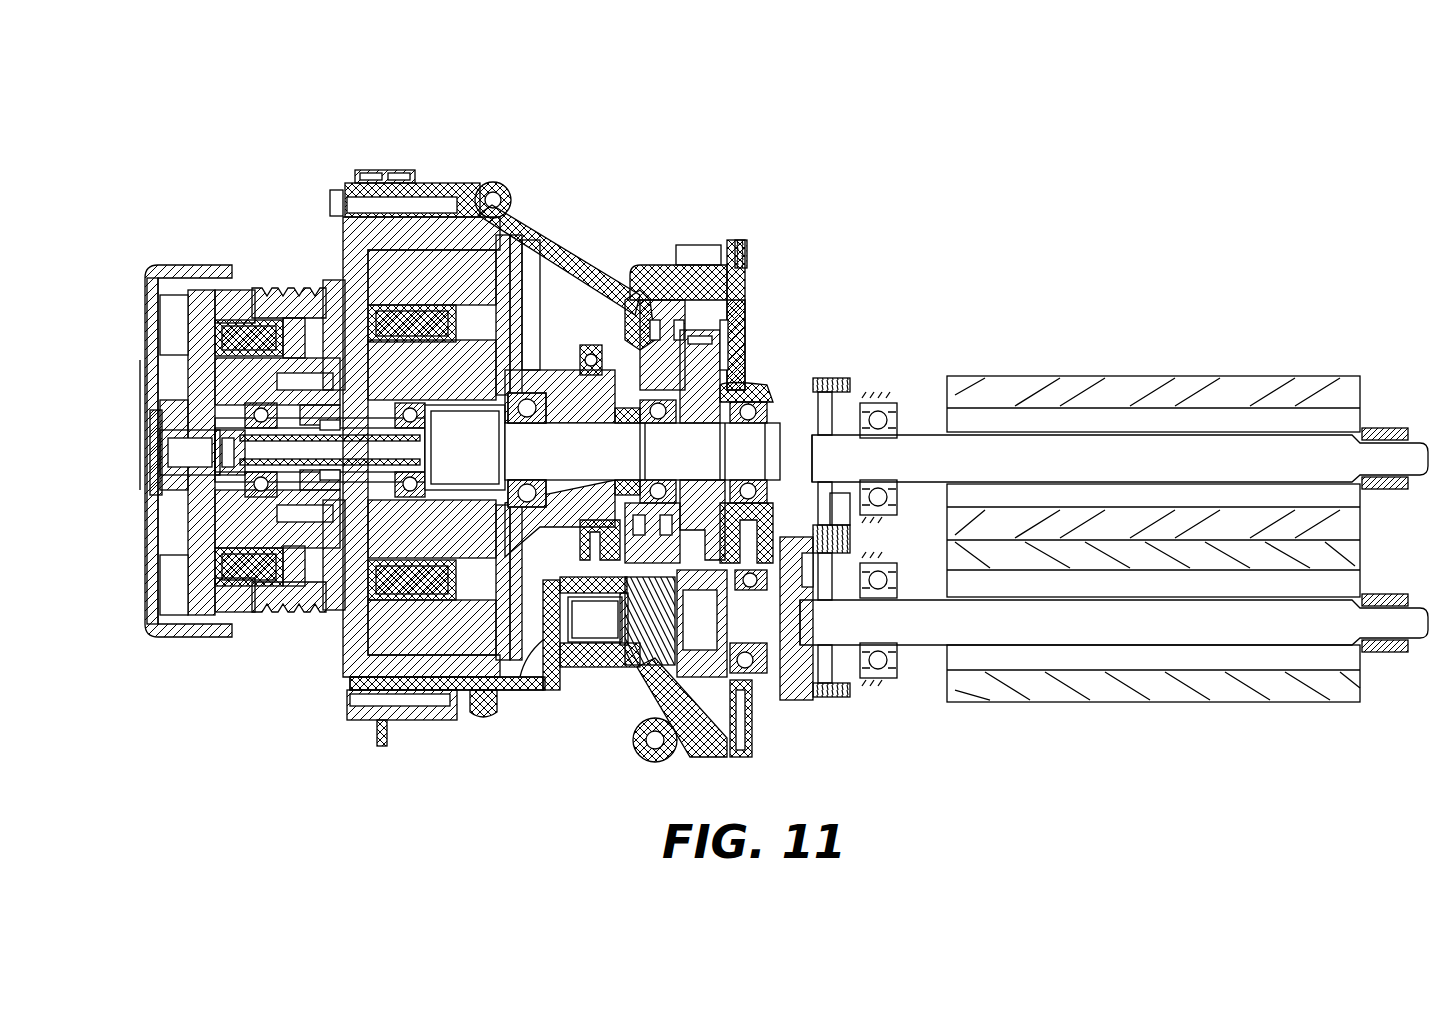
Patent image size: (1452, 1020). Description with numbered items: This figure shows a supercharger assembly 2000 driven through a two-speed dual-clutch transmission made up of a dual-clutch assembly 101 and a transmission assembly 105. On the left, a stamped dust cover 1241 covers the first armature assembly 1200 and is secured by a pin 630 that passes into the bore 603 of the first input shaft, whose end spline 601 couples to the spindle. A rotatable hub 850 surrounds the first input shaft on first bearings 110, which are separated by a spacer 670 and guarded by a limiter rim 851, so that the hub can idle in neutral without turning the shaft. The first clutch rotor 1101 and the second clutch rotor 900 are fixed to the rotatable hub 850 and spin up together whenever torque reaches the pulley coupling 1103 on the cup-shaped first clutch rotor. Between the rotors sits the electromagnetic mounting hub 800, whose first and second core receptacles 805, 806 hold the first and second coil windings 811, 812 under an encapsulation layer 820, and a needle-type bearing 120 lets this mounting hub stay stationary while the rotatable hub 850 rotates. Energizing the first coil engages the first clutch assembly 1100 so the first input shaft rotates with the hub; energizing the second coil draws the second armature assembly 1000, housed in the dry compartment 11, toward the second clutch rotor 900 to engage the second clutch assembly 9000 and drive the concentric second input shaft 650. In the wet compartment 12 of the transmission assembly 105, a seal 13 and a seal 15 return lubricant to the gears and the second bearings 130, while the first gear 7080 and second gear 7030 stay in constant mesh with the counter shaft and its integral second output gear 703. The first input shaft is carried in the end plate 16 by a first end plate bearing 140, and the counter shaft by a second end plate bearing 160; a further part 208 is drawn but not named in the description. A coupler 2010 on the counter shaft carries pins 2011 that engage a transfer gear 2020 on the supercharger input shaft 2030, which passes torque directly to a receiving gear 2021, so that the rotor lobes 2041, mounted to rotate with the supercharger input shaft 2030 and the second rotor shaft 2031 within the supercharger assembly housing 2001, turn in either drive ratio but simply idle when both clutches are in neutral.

The dual-clutch assembly 101 is at (250, 165).
The transmission assembly 105 is at (718, 228).
The dry compartment 11 is at (570, 282).
The wet compartment 12 is at (685, 692).
The seal 13 is at (591, 345).
The seal 15 is at (618, 428).
The end plate 16 is at (745, 275).
The first bearings 110 is at (415, 425).
The bearing 120 is at (300, 588).
The second bearings 130 is at (545, 420).
The first end plate bearing 140 is at (767, 416).
The second end plate bearing 160 is at (753, 690).
The mounting lug 208 is at (690, 745).
The end spline 601 is at (240, 447).
The bore 603 is at (160, 470).
The pin 630 is at (162, 430).
The second input shaft 650 is at (578, 530).
The spacer 670 is at (290, 420).
The second output gear 703 is at (632, 685).
The electromagnetic mounting hub 800 is at (350, 255).
The first core receptacle 805 is at (240, 588).
The second core receptacle 806 is at (330, 520).
The first coil winding 811 is at (240, 615).
The second coil winding 812 is at (380, 600).
The encapsulation layer 820 is at (515, 712).
The rotatable hub 850 is at (550, 330).
The limiter rim 851 is at (340, 425).
The second clutch rotor 900 is at (482, 185).
The second armature assembly 1000 is at (520, 250).
The first clutch assembly 1100 is at (205, 665).
The first clutch rotor 1101 is at (240, 290).
The pulley coupling 1103 is at (270, 292).
The first armature assembly 1200 is at (200, 258).
The dust cover 1241 is at (150, 275).
The supercharger assembly 2000 is at (978, 285).
The supercharger assembly housing 2001 is at (875, 400).
The coupler 2010 is at (792, 700).
The pins 2011 is at (845, 670).
The transfer gear 2020 is at (838, 697).
The receiving gear 2021 is at (845, 378).
The supercharger input shaft 2030 is at (928, 650).
The second rotor shaft 2031 is at (918, 430).
The rotor lobes 2041 is at (1102, 376).
The second gear 7030 is at (650, 325).
The first gear 7080 is at (705, 372).
The second clutch assembly 9000 is at (525, 185).